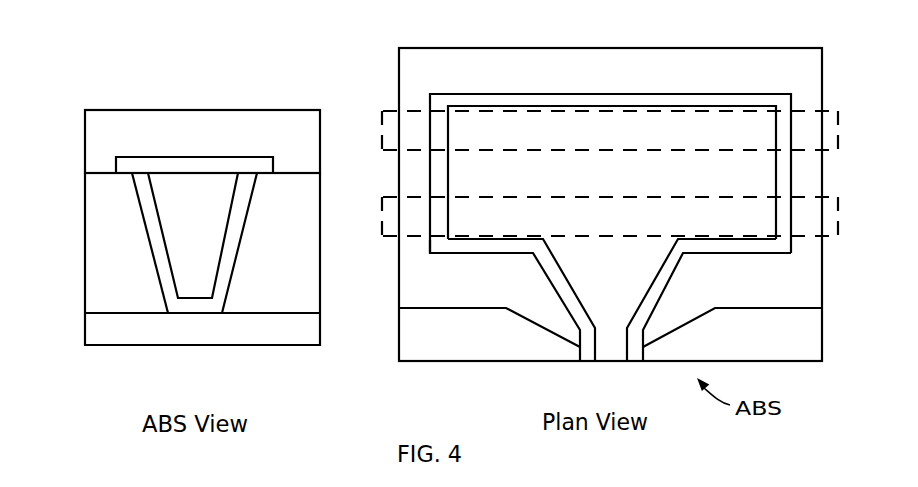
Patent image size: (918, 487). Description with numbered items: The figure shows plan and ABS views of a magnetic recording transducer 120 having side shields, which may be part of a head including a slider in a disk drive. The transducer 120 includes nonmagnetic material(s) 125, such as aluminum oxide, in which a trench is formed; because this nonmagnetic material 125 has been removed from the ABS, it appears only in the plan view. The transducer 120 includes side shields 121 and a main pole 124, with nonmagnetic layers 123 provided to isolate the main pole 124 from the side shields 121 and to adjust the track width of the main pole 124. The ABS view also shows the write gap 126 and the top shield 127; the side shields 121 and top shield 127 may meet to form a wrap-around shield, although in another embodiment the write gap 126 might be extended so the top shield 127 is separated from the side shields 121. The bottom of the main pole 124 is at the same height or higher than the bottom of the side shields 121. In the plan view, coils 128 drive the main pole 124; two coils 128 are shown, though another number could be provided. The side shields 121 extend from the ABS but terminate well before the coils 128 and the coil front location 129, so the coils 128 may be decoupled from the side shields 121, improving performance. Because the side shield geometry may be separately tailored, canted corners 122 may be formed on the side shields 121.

The magnetic recording transducer 120 is at (449, 27).
The side shields 121 is at (270, 313).
The canted corners 122 is at (660, 318).
The nonmagnetic layers 123 is at (140, 211).
The main pole 124 is at (227, 242).
The nonmagnetic material(s) 125 is at (824, 80).
The write gap 126 is at (273, 157).
The top shield 127 is at (100, 110).
The coils 128 is at (380, 200).
The coil front location 129 is at (414, 250).